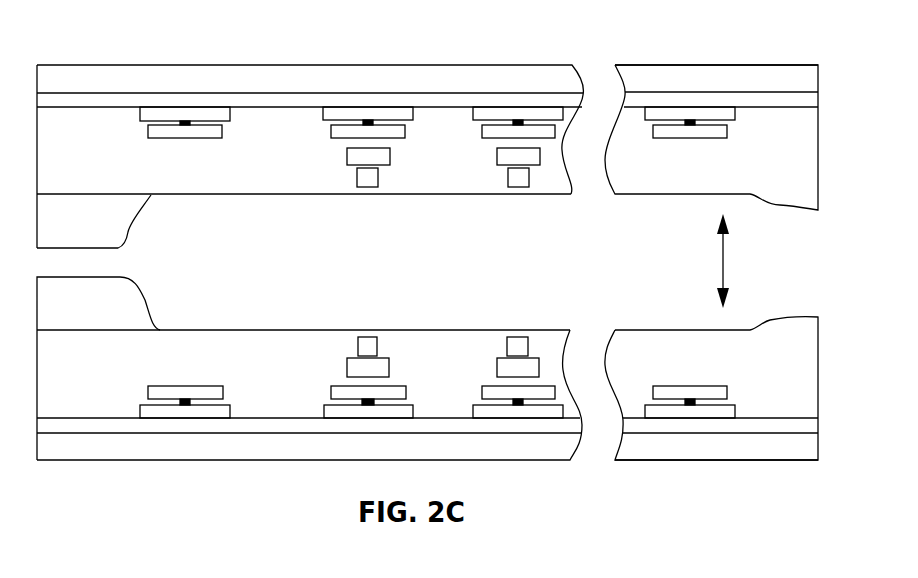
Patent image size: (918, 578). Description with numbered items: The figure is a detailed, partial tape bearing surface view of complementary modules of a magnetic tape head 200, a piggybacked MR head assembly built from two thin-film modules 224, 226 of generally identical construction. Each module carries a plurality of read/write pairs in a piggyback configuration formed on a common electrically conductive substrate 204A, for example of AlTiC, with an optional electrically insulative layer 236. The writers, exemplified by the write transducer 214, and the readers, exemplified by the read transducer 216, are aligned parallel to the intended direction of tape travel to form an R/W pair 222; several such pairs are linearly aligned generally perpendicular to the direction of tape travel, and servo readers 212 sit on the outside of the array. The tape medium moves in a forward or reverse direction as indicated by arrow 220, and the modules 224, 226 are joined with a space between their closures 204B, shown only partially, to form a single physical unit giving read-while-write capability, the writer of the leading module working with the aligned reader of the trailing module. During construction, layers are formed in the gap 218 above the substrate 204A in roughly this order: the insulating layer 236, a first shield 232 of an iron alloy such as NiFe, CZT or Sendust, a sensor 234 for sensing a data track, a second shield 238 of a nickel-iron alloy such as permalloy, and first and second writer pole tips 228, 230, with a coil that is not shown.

The magnetic tape head 200 is at (354, 44).
The substrate 204A is at (165, 90).
The closure 204B is at (137, 229).
The servo reader 212 is at (227, 370).
The write transducer 214 is at (442, 368).
The read transducer 216 is at (459, 408).
The gap 218 is at (228, 195).
The arrow 220 is at (727, 262).
The R/W pair 222 is at (373, 302).
The thin-film module 224 is at (745, 65).
The thin-film module 226 is at (730, 461).
The first writer pole tip 228 is at (347, 368).
The second writer pole tip 230 is at (356, 339).
The first shield 232 is at (323, 410).
The sensor 234 is at (316, 396).
The insulating layer 236 is at (808, 411).
The second shield 238 is at (322, 394).